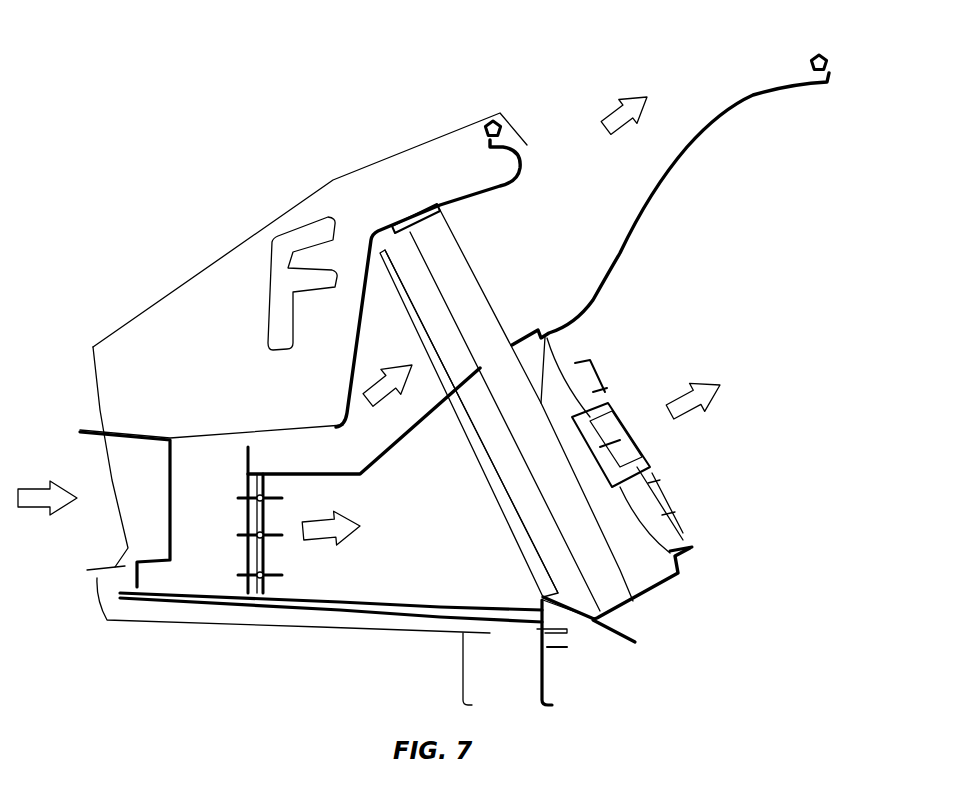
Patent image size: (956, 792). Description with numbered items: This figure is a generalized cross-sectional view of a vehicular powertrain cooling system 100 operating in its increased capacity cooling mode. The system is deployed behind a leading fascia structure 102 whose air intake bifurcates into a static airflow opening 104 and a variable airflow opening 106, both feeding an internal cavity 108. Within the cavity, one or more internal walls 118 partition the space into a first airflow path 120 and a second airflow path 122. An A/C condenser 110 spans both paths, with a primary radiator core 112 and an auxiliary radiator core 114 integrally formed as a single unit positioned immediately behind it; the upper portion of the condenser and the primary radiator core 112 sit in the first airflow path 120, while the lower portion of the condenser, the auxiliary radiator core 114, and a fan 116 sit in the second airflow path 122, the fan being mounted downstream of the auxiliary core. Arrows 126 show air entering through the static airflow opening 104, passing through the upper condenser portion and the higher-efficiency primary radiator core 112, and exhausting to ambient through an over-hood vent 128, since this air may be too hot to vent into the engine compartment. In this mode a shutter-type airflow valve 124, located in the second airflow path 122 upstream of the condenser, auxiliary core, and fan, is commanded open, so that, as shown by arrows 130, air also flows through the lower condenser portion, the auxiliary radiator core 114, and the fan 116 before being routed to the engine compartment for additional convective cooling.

The powertrain cooling system 100 is at (281, 45).
The leading fascia structure 102 is at (142, 335).
The static airflow opening 104 is at (265, 443).
The variable airflow opening 106 is at (250, 595).
The internal cavity 108 is at (228, 518).
The A/C condenser 110 is at (522, 535).
The primary radiator core 112 is at (445, 262).
The auxiliary radiator core 114 is at (548, 478).
The fan 116 is at (598, 377).
The internal walls 118 is at (655, 180).
The first airflow path 120 is at (560, 293).
The second airflow path 122 is at (413, 571).
The airflow valve 124 is at (278, 492).
The arrows 126 is at (613, 127).
The over-hood vent 128 is at (513, 123).
The arrows 130 is at (717, 397).